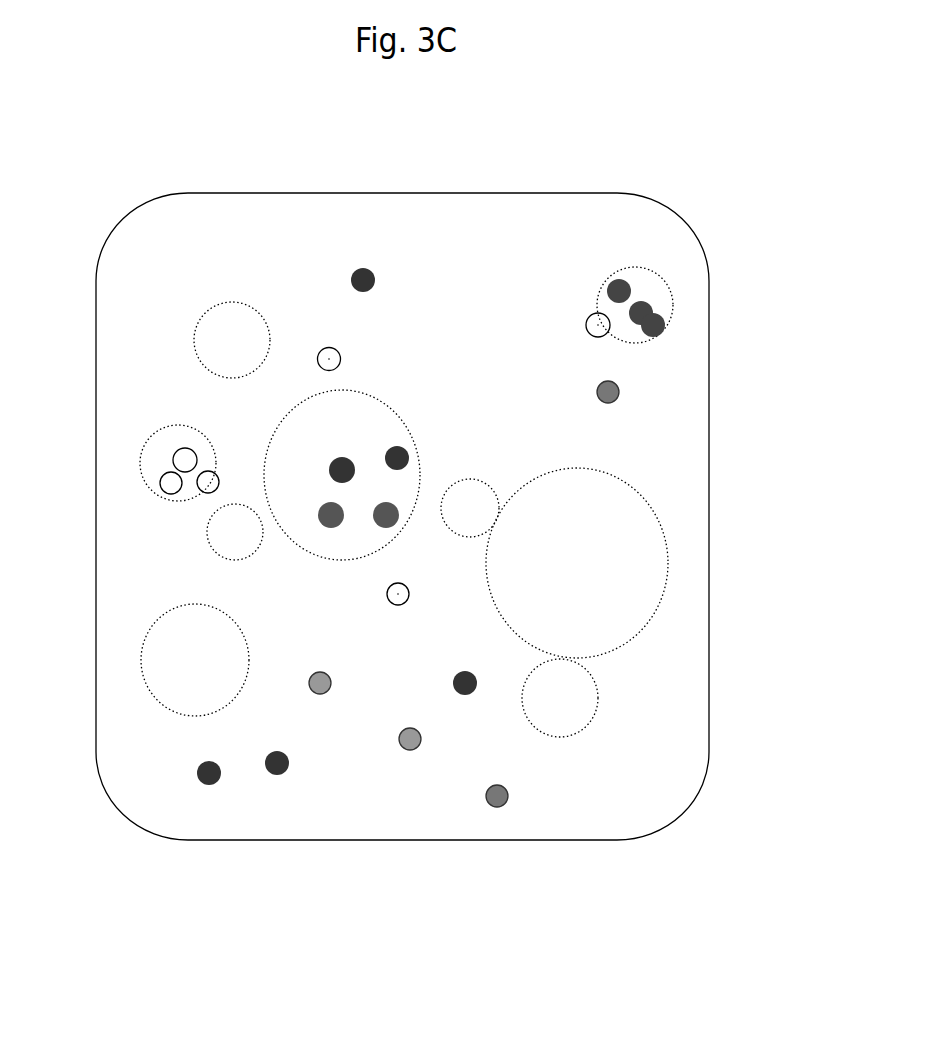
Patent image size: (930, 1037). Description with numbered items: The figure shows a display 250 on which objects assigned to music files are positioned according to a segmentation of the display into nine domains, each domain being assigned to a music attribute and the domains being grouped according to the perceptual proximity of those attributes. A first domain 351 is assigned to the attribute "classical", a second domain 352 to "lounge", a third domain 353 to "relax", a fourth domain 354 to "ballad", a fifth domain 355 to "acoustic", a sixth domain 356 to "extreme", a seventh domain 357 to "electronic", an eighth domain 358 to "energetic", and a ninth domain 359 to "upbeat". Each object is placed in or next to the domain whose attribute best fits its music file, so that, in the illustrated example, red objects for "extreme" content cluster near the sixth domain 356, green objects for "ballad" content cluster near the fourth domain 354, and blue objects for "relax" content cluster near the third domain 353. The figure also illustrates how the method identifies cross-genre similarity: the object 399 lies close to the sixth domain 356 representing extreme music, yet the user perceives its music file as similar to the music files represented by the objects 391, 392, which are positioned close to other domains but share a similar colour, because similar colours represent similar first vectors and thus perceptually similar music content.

The display 250 is at (405, 840).
The first domain 351 is at (141, 660).
The second domain 352 is at (207, 532).
The third domain 353 is at (141, 462).
The fourth domain 354 is at (290, 415).
The fifth domain 355 is at (195, 340).
The sixth domain 356 is at (672, 307).
The seventh domain 357 is at (490, 487).
The eighth domain 358 is at (667, 563).
The ninth domain 359 is at (598, 697).
The object 391 is at (338, 350).
The object 392 is at (387, 593).
The object 399 is at (590, 315).